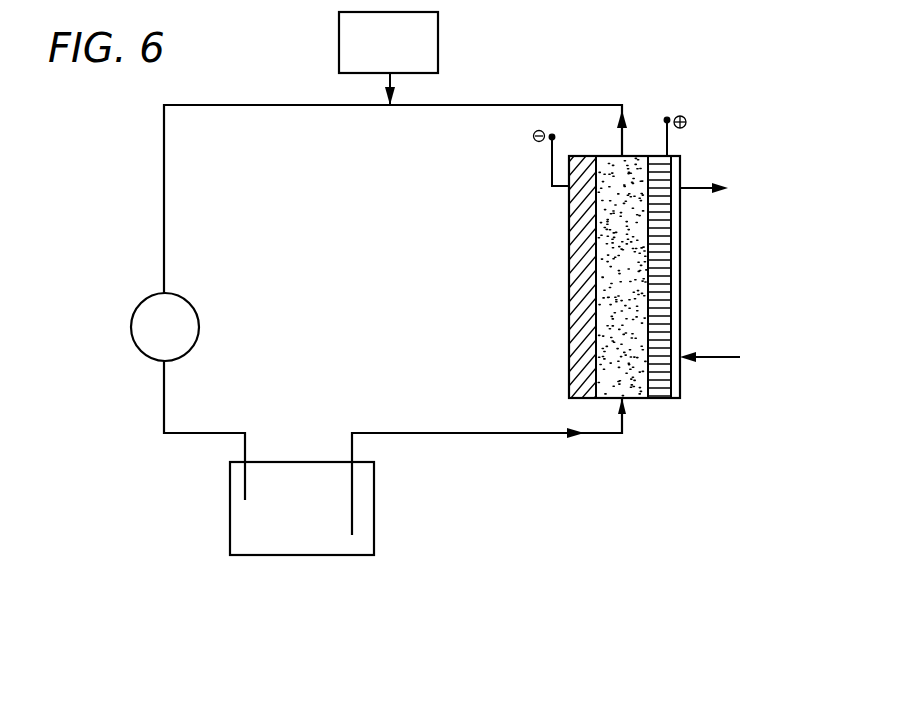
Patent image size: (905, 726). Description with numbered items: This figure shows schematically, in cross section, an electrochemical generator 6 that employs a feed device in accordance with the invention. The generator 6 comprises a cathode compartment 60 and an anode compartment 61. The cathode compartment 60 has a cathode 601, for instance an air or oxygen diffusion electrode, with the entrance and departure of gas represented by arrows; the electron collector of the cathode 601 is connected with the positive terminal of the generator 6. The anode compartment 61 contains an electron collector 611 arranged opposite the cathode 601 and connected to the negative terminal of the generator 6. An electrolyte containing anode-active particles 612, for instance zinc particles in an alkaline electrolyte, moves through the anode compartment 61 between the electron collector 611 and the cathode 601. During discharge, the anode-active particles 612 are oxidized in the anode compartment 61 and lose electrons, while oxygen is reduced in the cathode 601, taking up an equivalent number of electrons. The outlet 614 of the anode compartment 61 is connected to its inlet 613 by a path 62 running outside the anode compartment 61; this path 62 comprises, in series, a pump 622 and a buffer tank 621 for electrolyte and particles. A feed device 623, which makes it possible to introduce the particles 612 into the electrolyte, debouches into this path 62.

The generator 6 is at (645, 268).
The cathode compartment 60 is at (680, 288).
The cathode 601 is at (670, 317).
The anode compartment 61 is at (569, 238).
The electron collector 611 is at (572, 266).
The anode-active particles 612 is at (619, 302).
The inlet 613 is at (634, 398).
The outlet 614 is at (603, 156).
The path 62 is at (443, 433).
The buffer tank 621 is at (320, 525).
The pump 622 is at (165, 327).
The feed device 623 is at (438, 52).